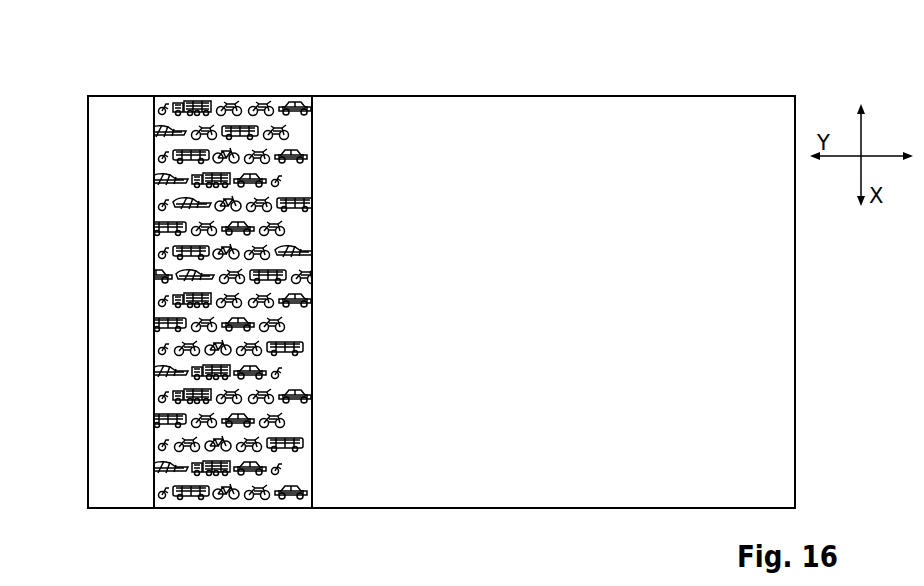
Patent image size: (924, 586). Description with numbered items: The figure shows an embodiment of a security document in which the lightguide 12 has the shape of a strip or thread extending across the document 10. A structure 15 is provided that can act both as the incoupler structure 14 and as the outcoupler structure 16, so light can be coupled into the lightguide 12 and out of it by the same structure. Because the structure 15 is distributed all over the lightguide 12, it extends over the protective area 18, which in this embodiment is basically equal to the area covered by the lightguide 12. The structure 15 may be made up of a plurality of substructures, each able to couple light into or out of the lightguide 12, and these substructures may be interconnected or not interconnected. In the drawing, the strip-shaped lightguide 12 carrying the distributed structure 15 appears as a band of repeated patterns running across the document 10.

The display device 10 is at (712, 96).
The lightguide 12 is at (315, 110).
The incoupler structure 14 is at (172, 100).
The structure 15 is at (228, 258).
The outcoupler structure 16 is at (228, 258).
The protective area 18 is at (200, 98).